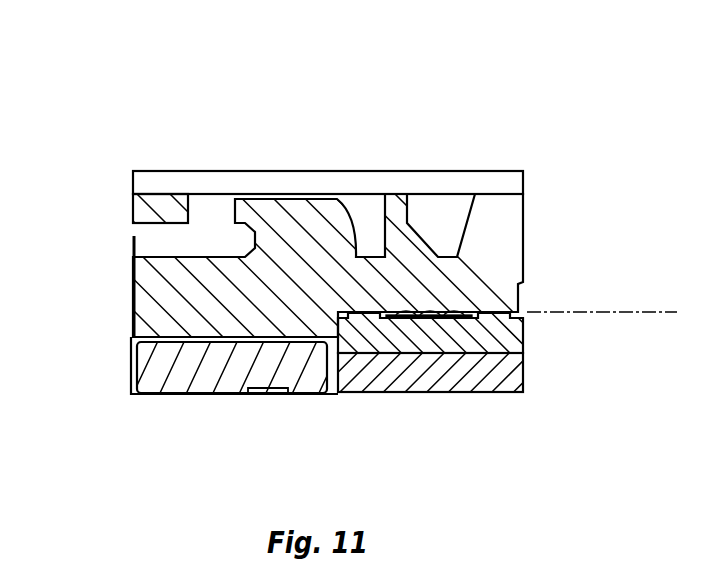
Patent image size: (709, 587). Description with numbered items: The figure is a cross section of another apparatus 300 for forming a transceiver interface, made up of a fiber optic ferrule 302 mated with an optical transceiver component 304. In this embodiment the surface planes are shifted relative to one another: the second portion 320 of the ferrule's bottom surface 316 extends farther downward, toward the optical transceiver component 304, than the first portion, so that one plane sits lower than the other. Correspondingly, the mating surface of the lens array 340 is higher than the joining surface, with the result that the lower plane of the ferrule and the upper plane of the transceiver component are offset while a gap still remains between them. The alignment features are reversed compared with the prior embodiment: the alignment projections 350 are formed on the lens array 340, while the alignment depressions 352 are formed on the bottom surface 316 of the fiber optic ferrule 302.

The apparatus 300 is at (565, 120).
The fiber optic ferrule 302 is at (133, 211).
The optical transceiver component 304 is at (525, 420).
The bottom surface 316 is at (182, 337).
The second portion 320 is at (131, 362).
The lens array 340 is at (527, 335).
The alignment projections 350 is at (525, 313).
The alignment depressions 352 is at (498, 312).